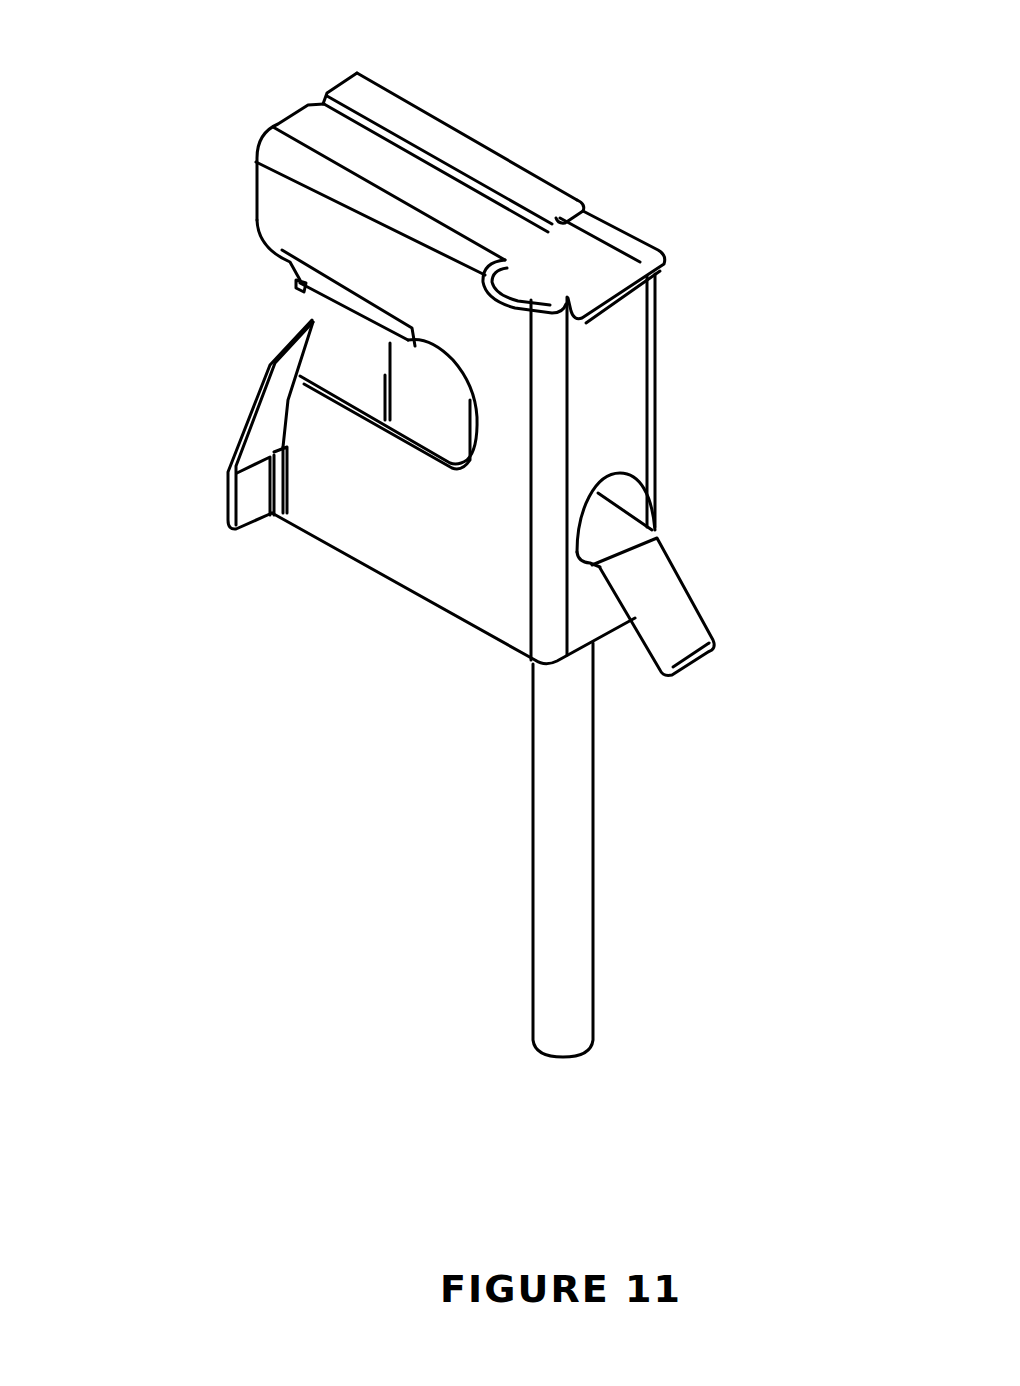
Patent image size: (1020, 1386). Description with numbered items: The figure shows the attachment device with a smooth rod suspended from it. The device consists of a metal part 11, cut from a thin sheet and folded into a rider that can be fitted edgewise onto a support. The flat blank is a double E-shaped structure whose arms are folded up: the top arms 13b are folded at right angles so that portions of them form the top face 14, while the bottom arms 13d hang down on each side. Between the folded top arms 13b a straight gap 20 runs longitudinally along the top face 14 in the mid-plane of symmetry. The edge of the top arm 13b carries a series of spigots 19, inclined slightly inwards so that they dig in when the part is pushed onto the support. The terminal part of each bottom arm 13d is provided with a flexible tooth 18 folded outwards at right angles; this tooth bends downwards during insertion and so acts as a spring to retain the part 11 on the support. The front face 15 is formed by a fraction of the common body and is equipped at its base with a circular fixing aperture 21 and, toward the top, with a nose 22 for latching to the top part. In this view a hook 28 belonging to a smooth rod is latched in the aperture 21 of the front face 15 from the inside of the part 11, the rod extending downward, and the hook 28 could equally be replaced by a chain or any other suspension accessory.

The metal part 11 is at (243, 632).
The top arm 13b is at (290, 200).
The bottom arm 13d is at (413, 547).
The top face 14 is at (493, 178).
The front face 15 is at (610, 383).
The flexible tooth 18 is at (287, 403).
The spigot 19 is at (305, 284).
The gap 20 is at (397, 148).
The fixing aperture 21 is at (637, 492).
The nose 22 is at (632, 263).
The hook 28 is at (658, 625).